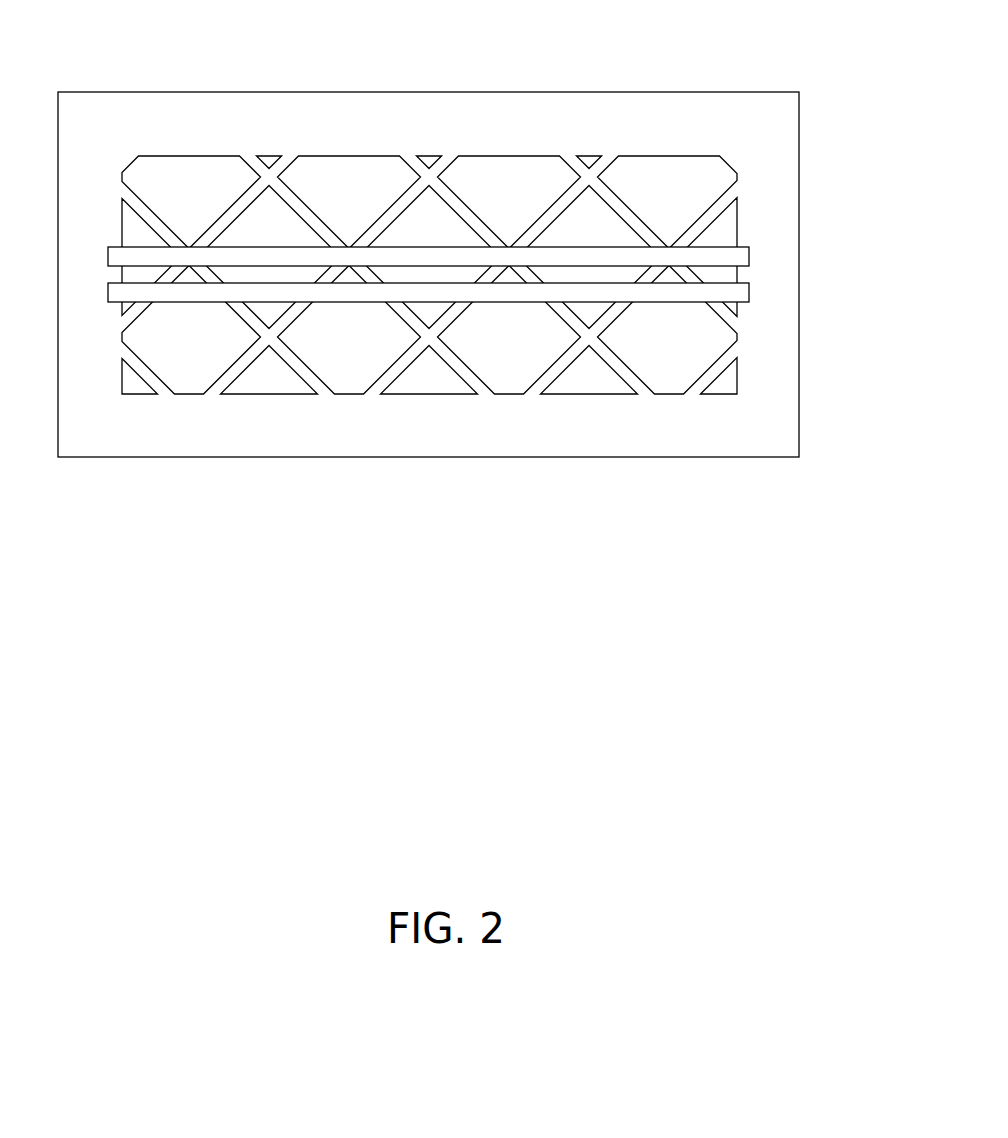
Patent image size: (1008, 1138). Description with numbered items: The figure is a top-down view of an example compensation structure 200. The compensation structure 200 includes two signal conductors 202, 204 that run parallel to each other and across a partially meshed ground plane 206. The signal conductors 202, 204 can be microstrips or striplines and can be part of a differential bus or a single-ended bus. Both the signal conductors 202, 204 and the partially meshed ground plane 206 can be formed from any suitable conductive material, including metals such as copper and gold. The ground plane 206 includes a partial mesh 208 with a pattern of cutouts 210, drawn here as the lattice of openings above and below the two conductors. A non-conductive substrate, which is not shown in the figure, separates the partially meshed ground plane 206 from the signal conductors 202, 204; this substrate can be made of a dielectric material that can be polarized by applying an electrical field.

The compensation structure 200 is at (467, 893).
The signal conductor 202 is at (749, 255).
The signal conductor 204 is at (749, 292).
The partially meshed ground plane 206 is at (157, 105).
The partial mesh 208 is at (557, 197).
The cutouts 210 is at (590, 380).